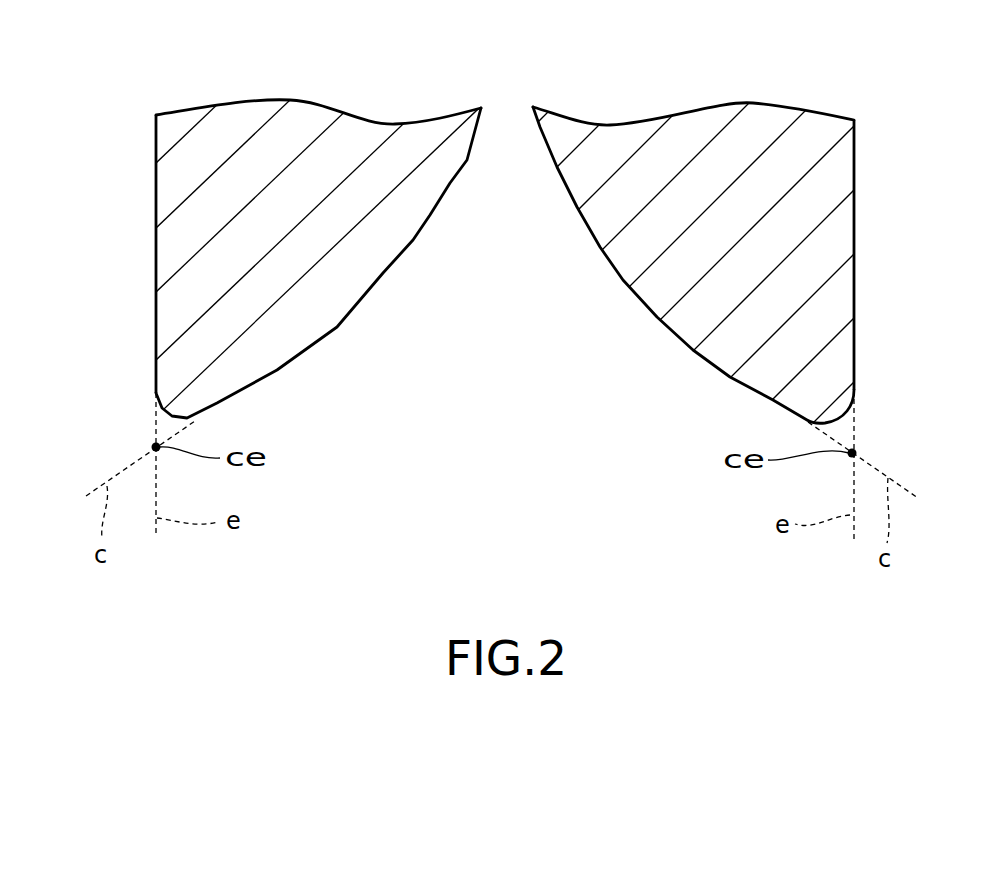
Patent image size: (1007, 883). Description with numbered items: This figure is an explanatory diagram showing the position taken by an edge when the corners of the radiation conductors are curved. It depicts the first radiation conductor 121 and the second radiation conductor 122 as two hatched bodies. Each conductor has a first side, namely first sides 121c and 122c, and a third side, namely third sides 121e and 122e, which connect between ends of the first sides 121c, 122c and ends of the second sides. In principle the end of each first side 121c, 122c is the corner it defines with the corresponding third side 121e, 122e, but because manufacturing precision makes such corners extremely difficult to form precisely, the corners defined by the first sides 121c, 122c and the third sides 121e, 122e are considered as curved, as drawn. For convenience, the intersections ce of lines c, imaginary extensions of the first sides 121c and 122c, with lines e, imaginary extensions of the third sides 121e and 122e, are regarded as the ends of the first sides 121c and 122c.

The first radiation conductor 121 is at (732, 130).
The first side 121c is at (617, 281).
The third side 121e is at (856, 167).
The second radiation conductor 122 is at (313, 121).
The first side 122c is at (381, 274).
The third side 122e is at (156, 210).